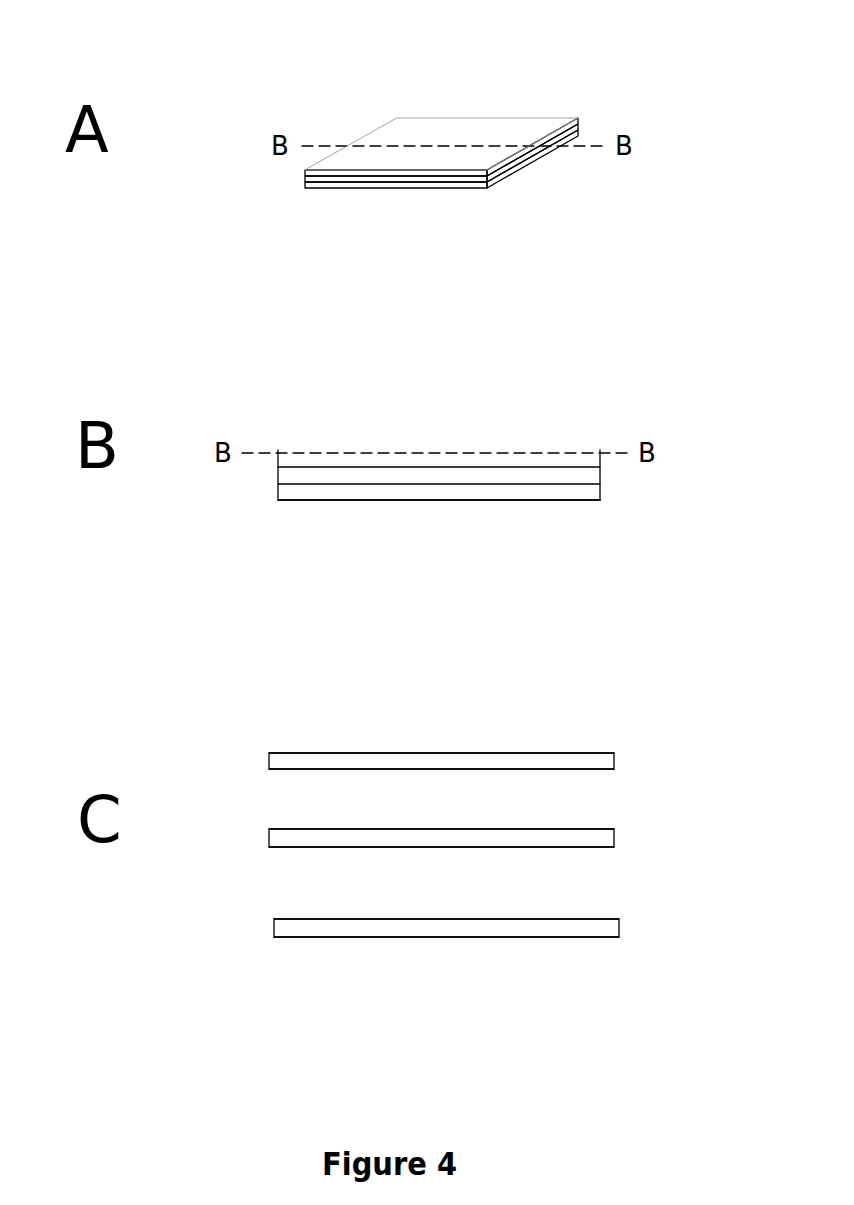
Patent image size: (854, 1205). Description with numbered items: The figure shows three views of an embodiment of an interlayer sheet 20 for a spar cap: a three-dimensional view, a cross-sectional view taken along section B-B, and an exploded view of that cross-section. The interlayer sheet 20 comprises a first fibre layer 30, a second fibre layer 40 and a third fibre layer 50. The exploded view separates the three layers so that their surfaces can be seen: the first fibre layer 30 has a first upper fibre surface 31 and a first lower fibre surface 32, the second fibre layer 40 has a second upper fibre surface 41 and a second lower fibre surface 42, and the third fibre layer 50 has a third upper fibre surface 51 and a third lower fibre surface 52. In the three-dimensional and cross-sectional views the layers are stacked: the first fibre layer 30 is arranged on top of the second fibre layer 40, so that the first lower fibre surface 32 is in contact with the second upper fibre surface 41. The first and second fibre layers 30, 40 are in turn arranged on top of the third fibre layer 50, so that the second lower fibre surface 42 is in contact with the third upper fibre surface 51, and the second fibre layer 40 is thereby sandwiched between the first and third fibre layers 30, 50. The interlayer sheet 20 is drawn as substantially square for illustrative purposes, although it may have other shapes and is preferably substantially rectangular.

The interlayer sheet 20 is at (647, 84).
The first fibre layer 30 is at (500, 166).
The first upper fibre surface 31 is at (447, 132).
The first lower fibre surface 32 is at (320, 770).
The second fibre layer 40 is at (474, 179).
The second upper fibre surface 41 is at (333, 830).
The second lower fibre surface 42 is at (310, 847).
The third fibre layer 50 is at (493, 184).
The third upper fibre surface 51 is at (337, 920).
The third lower fibre surface 52 is at (413, 502).